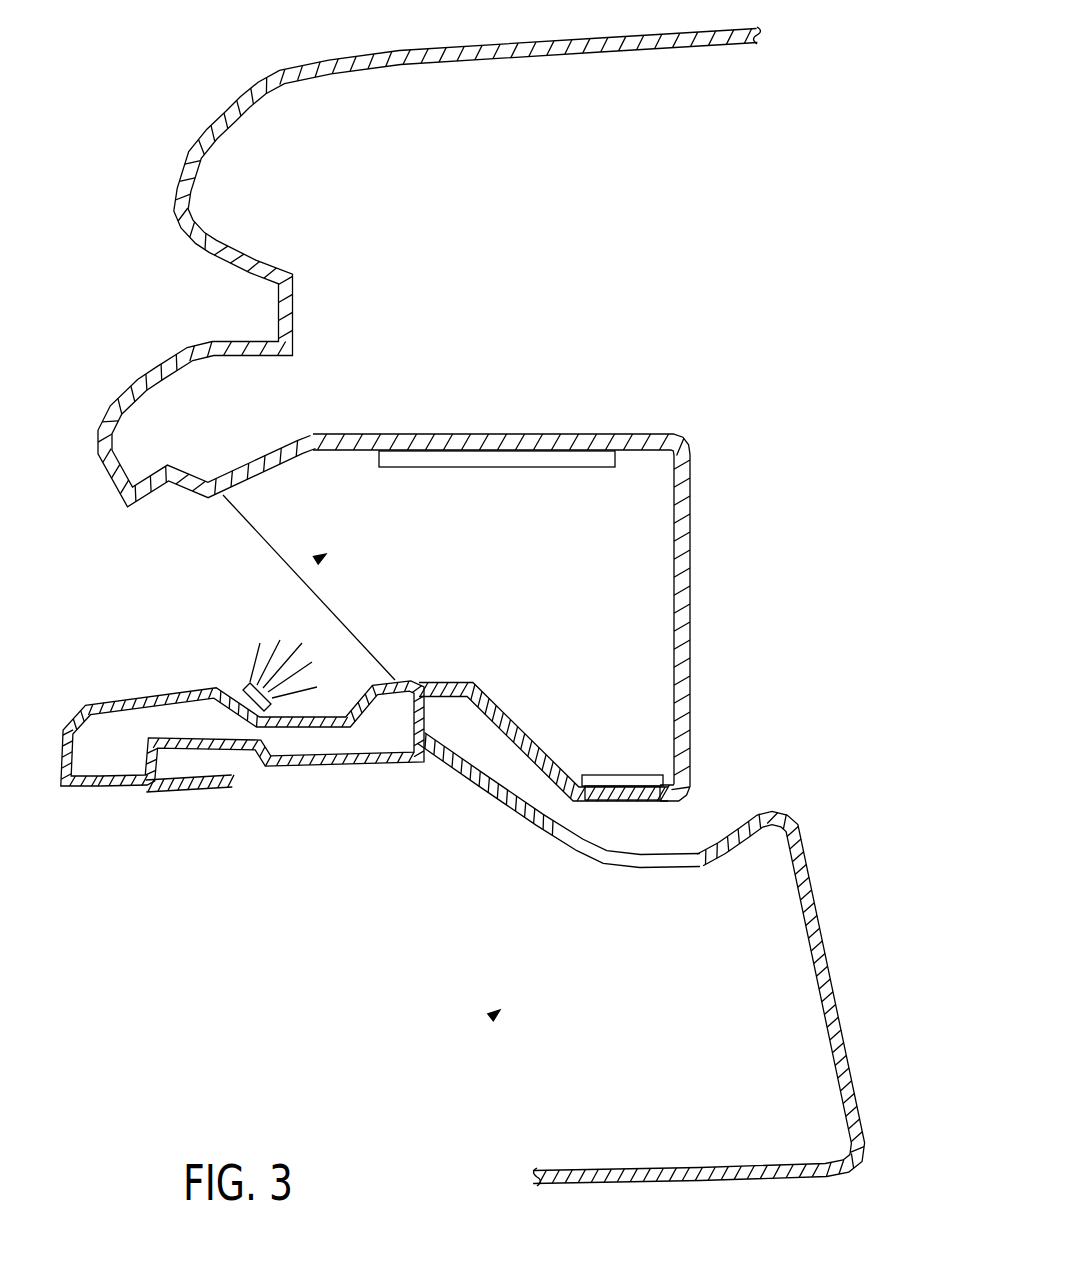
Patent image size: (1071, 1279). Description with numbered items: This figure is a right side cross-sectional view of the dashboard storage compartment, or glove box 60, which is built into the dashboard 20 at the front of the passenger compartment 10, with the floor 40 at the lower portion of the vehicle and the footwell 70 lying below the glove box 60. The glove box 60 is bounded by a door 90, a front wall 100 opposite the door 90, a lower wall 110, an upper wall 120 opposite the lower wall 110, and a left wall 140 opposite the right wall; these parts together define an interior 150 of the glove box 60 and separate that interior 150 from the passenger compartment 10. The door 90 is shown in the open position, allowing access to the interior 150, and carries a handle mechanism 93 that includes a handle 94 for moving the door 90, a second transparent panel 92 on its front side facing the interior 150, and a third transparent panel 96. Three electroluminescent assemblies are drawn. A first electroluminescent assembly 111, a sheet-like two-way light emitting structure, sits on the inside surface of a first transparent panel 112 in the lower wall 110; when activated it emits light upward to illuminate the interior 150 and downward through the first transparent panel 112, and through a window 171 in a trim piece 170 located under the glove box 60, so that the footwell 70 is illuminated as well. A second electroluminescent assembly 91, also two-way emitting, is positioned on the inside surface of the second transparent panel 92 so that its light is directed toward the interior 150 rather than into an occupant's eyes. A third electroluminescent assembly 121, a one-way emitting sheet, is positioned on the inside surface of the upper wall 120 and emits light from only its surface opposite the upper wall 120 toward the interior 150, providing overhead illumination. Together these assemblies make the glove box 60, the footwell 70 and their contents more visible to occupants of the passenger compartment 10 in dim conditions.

The passenger compartment 10 is at (462, 607).
The dashboard 20 is at (429, 267).
The floor 40 is at (699, 998).
The dashboard storage compartment 60 is at (534, 617).
The footwell 70 is at (619, 1020).
The door 90 is at (242, 755).
The second electroluminescent assembly 91 is at (265, 662).
The second transparent panel 92 is at (228, 709).
The handle mechanism 93 is at (140, 692).
The handle 94 is at (190, 805).
The third transparent panel 96 is at (219, 770).
The front wall 100 is at (724, 616).
The lower wall 110 is at (543, 742).
The first electroluminescent assembly 111 is at (618, 761).
The first transparent panel 112 is at (632, 816).
The upper wall 120 is at (501, 419).
The third electroluminescent assembly 121 is at (497, 477).
The left wall 140 is at (587, 614).
The interior 150 is at (295, 587).
The trim piece 170 is at (558, 800).
The window 171 is at (645, 881).